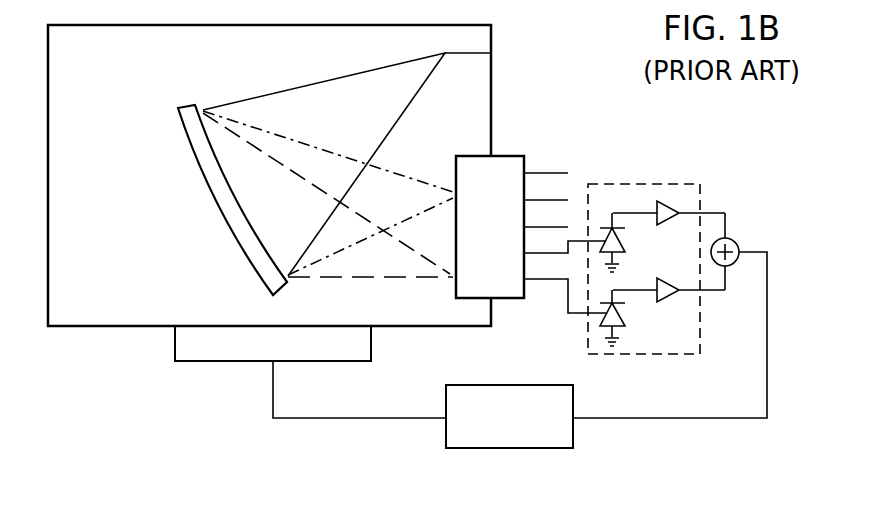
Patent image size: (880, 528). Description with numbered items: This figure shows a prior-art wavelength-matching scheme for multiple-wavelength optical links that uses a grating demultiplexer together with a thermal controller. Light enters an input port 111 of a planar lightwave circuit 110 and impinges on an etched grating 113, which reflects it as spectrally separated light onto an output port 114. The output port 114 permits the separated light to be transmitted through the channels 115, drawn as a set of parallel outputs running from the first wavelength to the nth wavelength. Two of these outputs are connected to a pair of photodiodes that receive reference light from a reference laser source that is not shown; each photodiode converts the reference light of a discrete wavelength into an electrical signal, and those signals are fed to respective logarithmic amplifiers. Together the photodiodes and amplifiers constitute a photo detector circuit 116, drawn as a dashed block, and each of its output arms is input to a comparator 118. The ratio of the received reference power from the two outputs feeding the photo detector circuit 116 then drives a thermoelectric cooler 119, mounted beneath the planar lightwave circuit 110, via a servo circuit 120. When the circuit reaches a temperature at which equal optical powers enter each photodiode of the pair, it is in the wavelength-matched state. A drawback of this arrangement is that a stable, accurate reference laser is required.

The planar lightwave circuit 110 is at (491, 82).
The input port 111 is at (491, 53).
The etched grating 113 is at (232, 250).
The output port 114 is at (515, 155).
The channels 115 is at (589, 249).
The photo detector circuit 116 is at (698, 187).
The comparator 118 is at (740, 244).
The thermoelectric cooler 119 is at (213, 362).
The servo circuit 120 is at (472, 449).